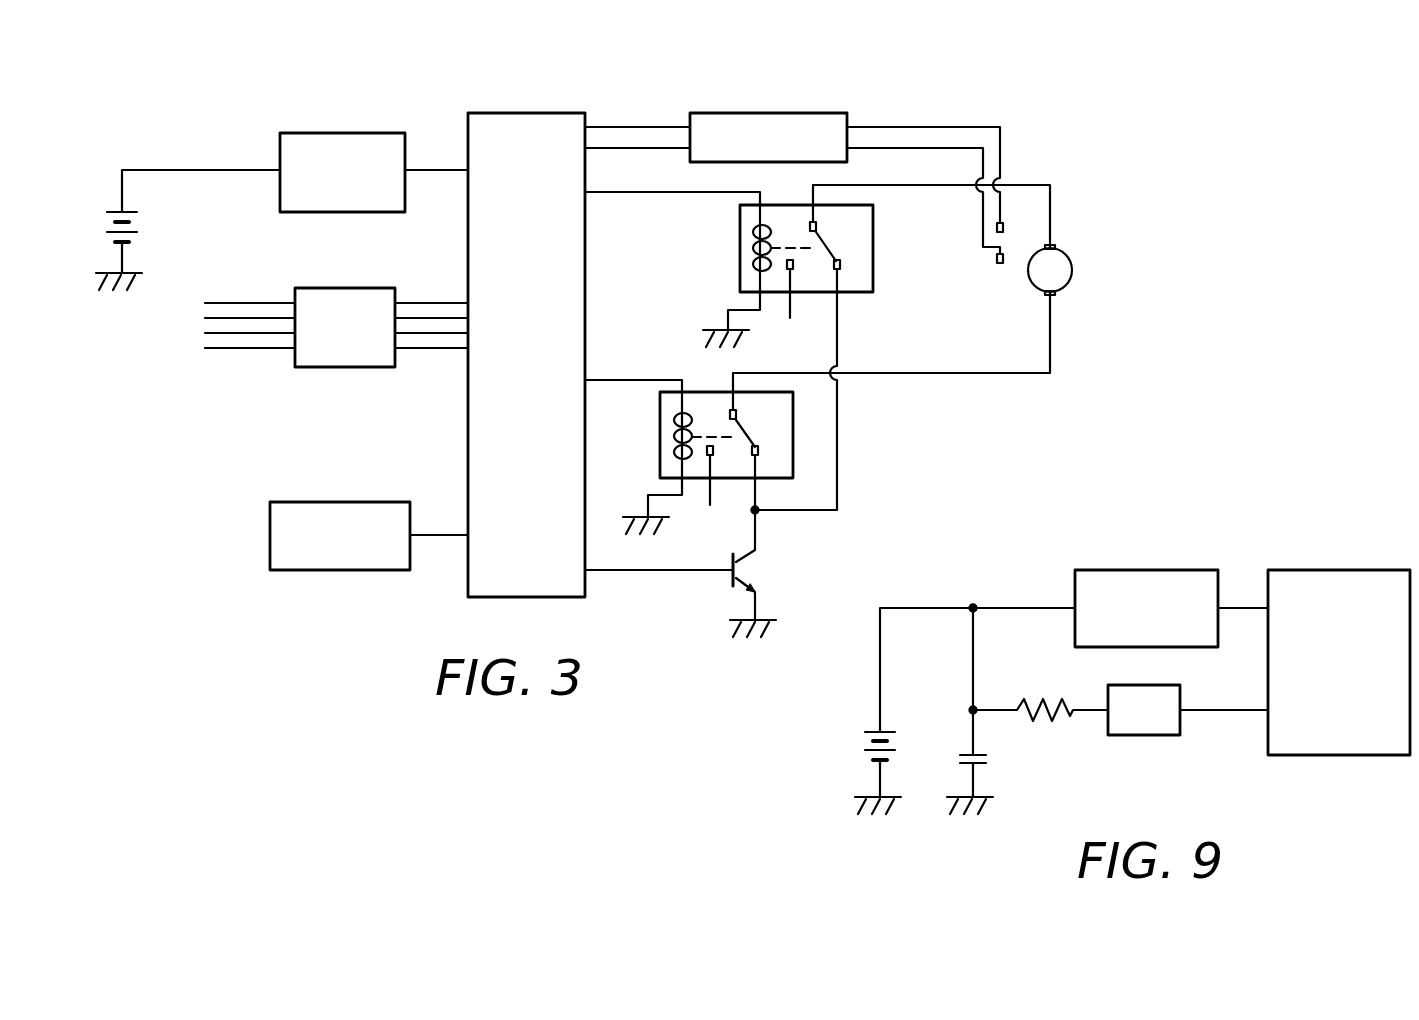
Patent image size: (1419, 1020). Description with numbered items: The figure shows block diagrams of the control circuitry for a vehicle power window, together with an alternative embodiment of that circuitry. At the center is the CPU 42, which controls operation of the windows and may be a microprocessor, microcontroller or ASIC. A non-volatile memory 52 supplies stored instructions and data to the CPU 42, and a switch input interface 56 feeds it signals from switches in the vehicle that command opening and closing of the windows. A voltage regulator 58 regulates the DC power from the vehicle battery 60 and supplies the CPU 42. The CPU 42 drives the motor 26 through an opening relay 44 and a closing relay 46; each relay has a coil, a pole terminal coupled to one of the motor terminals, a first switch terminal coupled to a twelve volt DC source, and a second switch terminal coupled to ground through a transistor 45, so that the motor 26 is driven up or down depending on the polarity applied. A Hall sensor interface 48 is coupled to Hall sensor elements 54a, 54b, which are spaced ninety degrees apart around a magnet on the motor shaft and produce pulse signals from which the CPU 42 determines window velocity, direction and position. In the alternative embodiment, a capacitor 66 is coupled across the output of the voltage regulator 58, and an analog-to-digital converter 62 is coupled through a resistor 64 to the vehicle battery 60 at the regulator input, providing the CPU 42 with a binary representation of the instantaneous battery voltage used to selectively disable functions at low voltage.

In FIG. 3, the motor 26 is at (1072, 270).
In FIG. 3, the CPU 42 is at (468, 234).
In FIG. 9, the CPU 42 is at (1333, 755).
In FIG. 3, the opening relay 44 is at (740, 245).
In FIG. 3, the transistor 45 is at (733, 578).
In FIG. 3, the closing relay 46 is at (660, 410).
In FIG. 3, the Hall sensor interface 48 is at (794, 113).
In FIG. 3, the non-volatile memory 52 is at (342, 570).
In FIG. 3, the Hall sensor element 54a is at (1004, 228).
In FIG. 3, the Hall sensor element 54b is at (1000, 263).
In FIG. 3, the switch input interface 56 is at (345, 367).
In FIG. 3, the voltage regulator 58 is at (345, 133).
In FIG. 9, the voltage regulator 58 is at (1148, 570).
In FIG. 3, the vehicle battery 60 is at (105, 200).
In FIG. 9, the vehicle battery 60 is at (873, 732).
In FIG. 9, the analog-to-digital converter 62 is at (1150, 735).
In FIG. 9, the resistor 64 is at (1050, 718).
In FIG. 9, the capacitor 66 is at (980, 762).